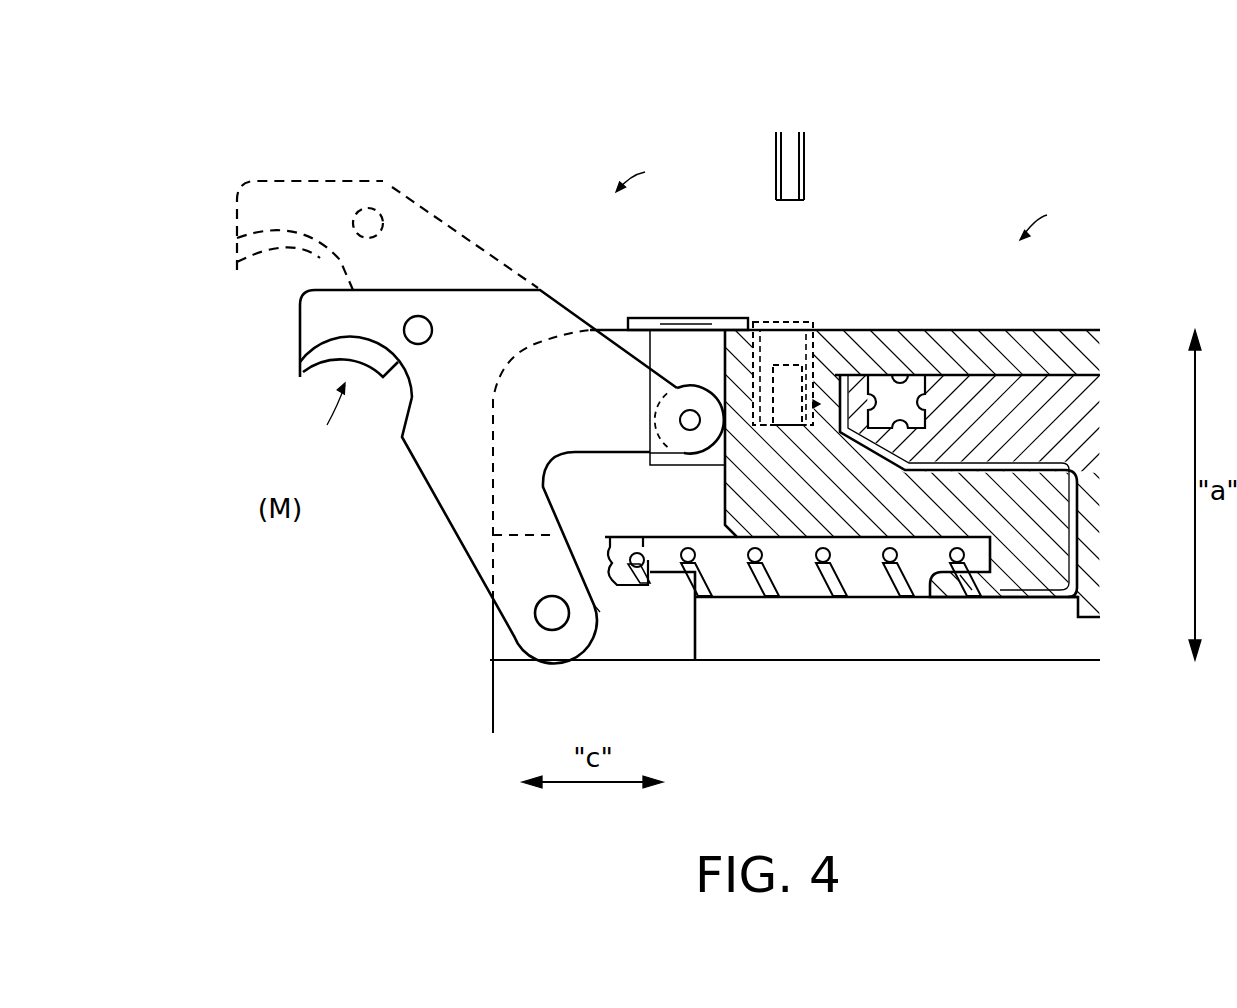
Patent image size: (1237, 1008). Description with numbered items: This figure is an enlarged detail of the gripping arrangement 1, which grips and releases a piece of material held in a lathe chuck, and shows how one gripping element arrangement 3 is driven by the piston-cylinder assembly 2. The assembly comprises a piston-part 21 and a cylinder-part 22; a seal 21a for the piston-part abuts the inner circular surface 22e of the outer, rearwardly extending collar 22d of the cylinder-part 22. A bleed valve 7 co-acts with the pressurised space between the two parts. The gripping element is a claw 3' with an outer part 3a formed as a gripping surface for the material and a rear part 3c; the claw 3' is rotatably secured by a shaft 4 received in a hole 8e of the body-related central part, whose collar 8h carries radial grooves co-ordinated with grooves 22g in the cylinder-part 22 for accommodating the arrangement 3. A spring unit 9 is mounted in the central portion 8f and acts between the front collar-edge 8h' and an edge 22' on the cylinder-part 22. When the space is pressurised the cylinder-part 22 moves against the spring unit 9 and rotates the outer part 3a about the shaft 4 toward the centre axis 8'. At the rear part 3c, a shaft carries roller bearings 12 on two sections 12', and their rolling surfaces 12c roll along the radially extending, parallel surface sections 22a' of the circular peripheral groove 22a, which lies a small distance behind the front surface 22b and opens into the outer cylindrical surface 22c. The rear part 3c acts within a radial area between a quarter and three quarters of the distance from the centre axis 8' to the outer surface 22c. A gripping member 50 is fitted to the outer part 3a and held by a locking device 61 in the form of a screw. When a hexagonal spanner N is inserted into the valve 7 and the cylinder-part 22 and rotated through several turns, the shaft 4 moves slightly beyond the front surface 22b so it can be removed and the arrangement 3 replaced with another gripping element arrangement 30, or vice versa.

The gripping arrangement 1 is at (641, 171).
The piston-cylinder assembly 2 is at (1044, 218).
The hexagonal spanner N is at (805, 150).
The gripping element arrangement 3 is at (482, 530).
The outer part 3a is at (300, 338).
The claw 3' is at (488, 339).
The rear part 3c is at (650, 380).
The shaft 4 is at (533, 620).
The bleed valve 7 is at (782, 328).
The centre axis 8' is at (795, 696).
The hole 8e is at (565, 622).
The central portion 8f is at (854, 648).
The collar 8h is at (516, 676).
The front collar-edge 8h' is at (629, 592).
The spring unit 9 is at (825, 560).
The roller bearing 12 is at (654, 418).
The shaft sections 12' is at (601, 420).
The rolling surface 12c is at (707, 455).
The piston-part 21 is at (977, 446).
The seal 21a is at (912, 376).
The cylinder-part 22 is at (837, 437).
The edge 22' is at (984, 645).
The circular peripheral groove 22a is at (673, 292).
The surface sections 22a' is at (698, 300).
The front surface 22b is at (492, 478).
The outer cylindrical surface 22c is at (832, 333).
The collar 22d is at (1048, 345).
The inner circular surface 22e is at (1080, 378).
The grooves 22g is at (579, 506).
The gripping element arrangement 30 is at (468, 236).
The gripping member 50 is at (318, 418).
The locking device 61 is at (380, 212).